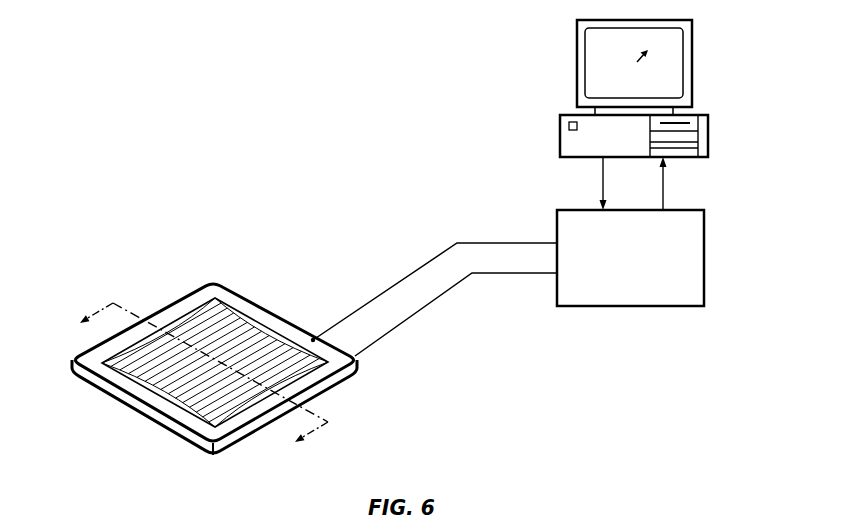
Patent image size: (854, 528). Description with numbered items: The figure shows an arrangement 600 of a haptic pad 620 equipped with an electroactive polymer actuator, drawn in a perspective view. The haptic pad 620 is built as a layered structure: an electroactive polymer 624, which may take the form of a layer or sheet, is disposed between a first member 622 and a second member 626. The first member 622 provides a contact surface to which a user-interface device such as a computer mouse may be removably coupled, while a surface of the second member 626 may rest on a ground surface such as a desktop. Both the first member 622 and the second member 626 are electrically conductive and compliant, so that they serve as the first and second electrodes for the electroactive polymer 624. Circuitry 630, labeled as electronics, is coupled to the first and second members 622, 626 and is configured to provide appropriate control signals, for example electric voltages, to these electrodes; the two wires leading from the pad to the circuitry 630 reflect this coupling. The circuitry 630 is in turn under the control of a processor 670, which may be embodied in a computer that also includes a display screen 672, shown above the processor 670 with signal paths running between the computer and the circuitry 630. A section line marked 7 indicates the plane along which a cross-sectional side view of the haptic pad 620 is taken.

The arrangement 600 is at (190, 70).
The haptic pad 620 is at (170, 287).
The first member 622 is at (245, 335).
The electroactive polymer 624 is at (88, 362).
The second member 626 is at (315, 400).
The circuitry 630 is at (705, 258).
The processor 670 is at (560, 133).
The display screen 672 is at (692, 63).
The section line 7- 7 is at (195, 381).